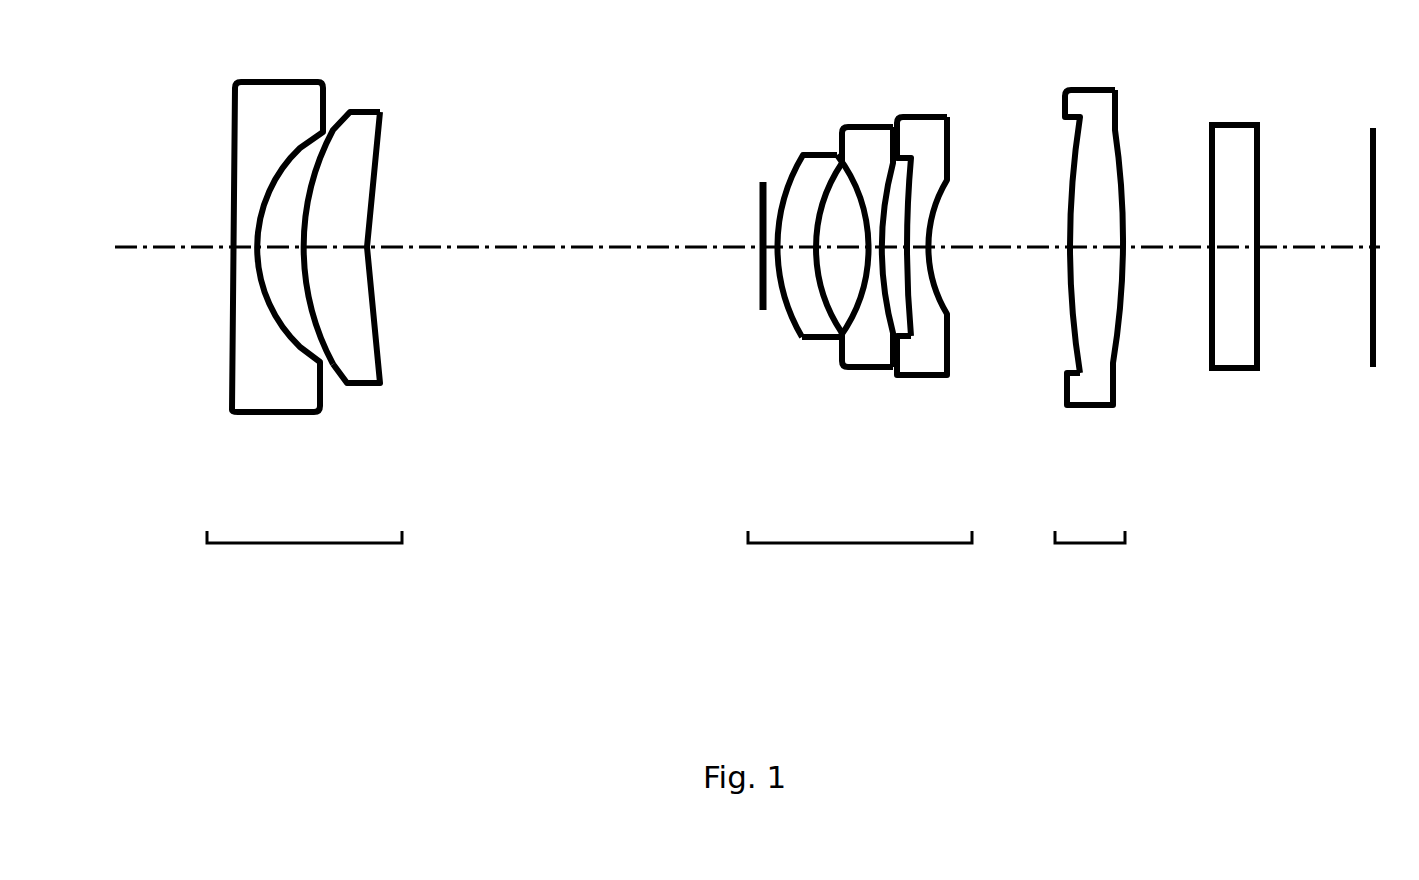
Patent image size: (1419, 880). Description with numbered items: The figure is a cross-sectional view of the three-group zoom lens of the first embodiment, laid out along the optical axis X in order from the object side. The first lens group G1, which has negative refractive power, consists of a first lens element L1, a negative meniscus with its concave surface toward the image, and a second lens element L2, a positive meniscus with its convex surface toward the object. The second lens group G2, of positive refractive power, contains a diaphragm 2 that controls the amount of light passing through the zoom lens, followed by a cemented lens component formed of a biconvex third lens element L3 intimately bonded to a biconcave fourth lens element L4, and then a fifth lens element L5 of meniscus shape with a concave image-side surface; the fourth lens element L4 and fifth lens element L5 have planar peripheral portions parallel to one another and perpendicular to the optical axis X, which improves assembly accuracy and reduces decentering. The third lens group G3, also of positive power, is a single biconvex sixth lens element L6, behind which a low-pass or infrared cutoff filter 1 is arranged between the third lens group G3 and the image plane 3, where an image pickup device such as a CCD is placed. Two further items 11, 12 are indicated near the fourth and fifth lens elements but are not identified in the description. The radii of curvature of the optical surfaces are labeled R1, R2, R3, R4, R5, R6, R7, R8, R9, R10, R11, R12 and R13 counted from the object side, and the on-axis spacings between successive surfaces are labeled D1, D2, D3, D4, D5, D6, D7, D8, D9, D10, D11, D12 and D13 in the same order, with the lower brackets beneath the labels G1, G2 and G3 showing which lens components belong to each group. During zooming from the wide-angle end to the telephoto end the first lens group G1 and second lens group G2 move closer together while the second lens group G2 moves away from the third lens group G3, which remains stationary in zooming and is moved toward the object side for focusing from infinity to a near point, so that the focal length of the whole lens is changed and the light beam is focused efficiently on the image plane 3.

The low-pass filter or infrared cutoff filter 1 is at (1204, 244).
The diaphragm 2 is at (760, 295).
The image plane 3 is at (1370, 190).
The lens element of composite lens L4 11 is at (864, 286).
The resin layer of composite lens L4 12 is at (871, 363).
The optical axis X is at (172, 243).
The first lens group G1 is at (322, 297).
The second lens group G2 is at (885, 297).
The third lens group G3 is at (1090, 337).
The first lens element L1 is at (251, 248).
The second lens element L2 is at (384, 236).
The third lens element L3 is at (814, 234).
The fourth lens element L4 is at (850, 286).
The fifth lens element L5 is at (960, 266).
The sixth lens element L6 is at (1090, 282).
The radius of curvature of the first surface R1 is at (233, 133).
The radius of curvature of the second surface R2 is at (277, 207).
The radius of curvature of the third surface R3 is at (330, 135).
The radius of curvature of the fourth surface R4 is at (370, 205).
The radius of curvature of the fifth surface R5 is at (758, 208).
The radius of curvature of the sixth surface R6 is at (790, 176).
The radius of curvature of the seventh surface R7 is at (834, 190).
The radius of curvature of the eighth surface R8 is at (864, 197).
The radius of curvature of the ninth surface R9 is at (912, 165).
The radius of curvature of the tenth surface R10 is at (946, 197).
The radius of curvature of the eleventh surface R11 is at (1068, 183).
The radius of curvature of the twelfth surface R12 is at (1121, 243).
The radius of curvature of the thirteenth surface R13 is at (1178, 92).
The first on-axis surface spacing D1 is at (240, 250).
The second on-axis surface spacing D2 is at (280, 253).
The third on-axis surface spacing D3 is at (337, 250).
The fourth on-axis surface spacing D4 is at (560, 250).
The fifth on-axis surface spacing D5 is at (771, 255).
The sixth on-axis surface spacing D6 is at (820, 252).
The seventh on-axis surface spacing D7 is at (875, 240).
The eighth on-axis surface spacing D8 is at (905, 226).
The ninth on-axis surface spacing D9 is at (912, 253).
The tenth on-axis surface spacing D10 is at (1020, 253).
The eleventh on-axis surface spacing D11 is at (1100, 253).
The twelfth on-axis surface spacing D12 is at (1172, 243).
The thirteenth on-axis surface spacing D13 is at (1235, 253).